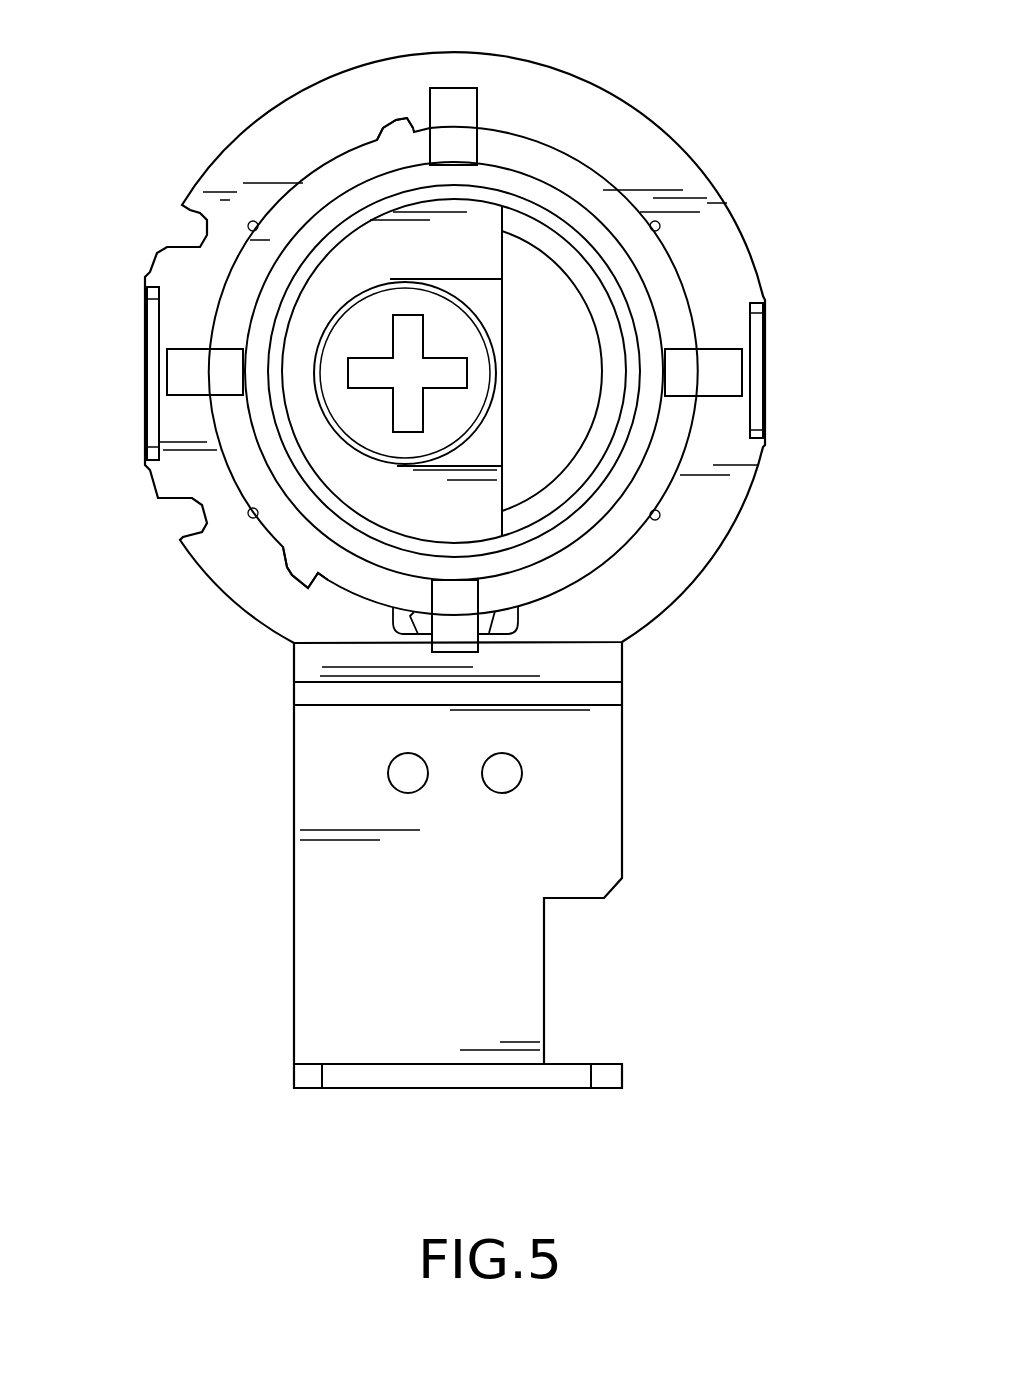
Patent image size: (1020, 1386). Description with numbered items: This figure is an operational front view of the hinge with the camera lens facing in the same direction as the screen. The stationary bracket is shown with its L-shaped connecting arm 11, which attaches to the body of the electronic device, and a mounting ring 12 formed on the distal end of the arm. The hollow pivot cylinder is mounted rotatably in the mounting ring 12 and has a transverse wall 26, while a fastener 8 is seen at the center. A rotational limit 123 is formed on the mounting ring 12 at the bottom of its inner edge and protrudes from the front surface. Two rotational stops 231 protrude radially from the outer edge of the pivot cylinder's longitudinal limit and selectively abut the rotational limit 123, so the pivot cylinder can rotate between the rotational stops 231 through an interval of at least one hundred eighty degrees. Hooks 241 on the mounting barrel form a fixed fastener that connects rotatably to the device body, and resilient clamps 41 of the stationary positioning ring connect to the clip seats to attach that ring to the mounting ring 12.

The fastener 8 is at (350, 394).
The connecting arm 11 is at (577, 760).
The mounting ring 12 is at (710, 527).
The transverse wall 26 is at (485, 218).
The clamps 41 is at (760, 358).
The rotational limit 123 is at (480, 634).
The rotational stops 231 is at (297, 567).
The hooks 241 is at (455, 97).